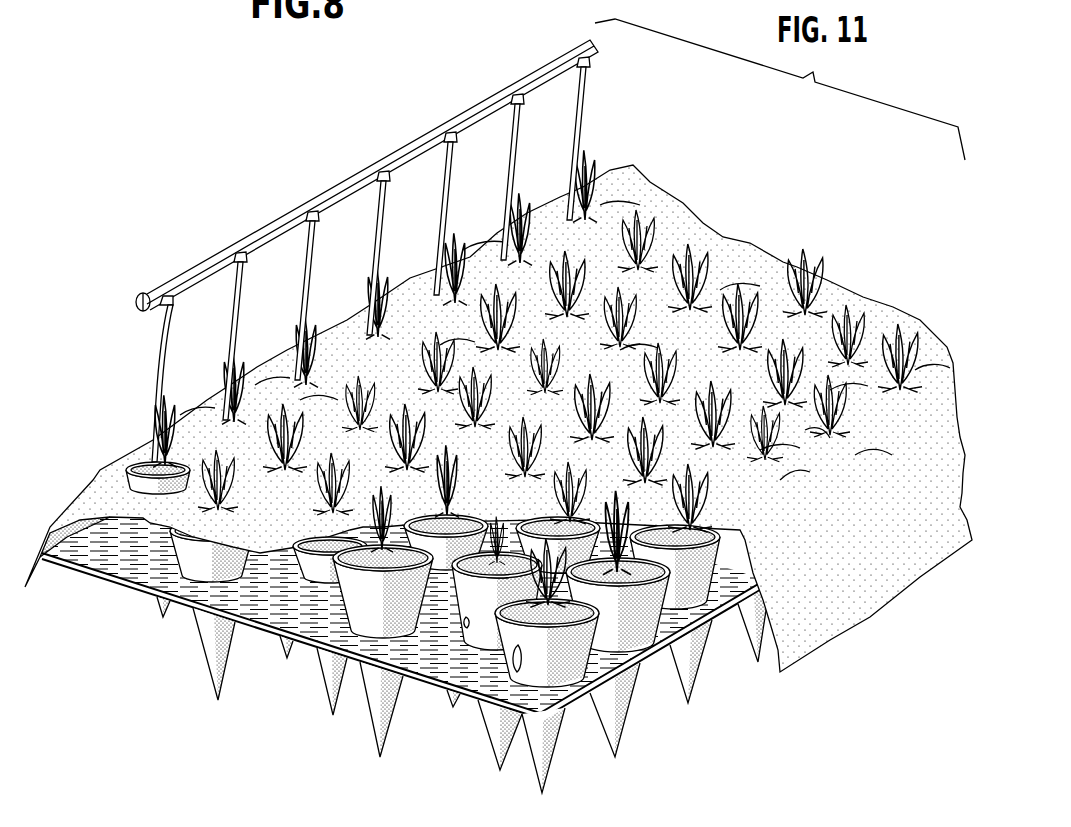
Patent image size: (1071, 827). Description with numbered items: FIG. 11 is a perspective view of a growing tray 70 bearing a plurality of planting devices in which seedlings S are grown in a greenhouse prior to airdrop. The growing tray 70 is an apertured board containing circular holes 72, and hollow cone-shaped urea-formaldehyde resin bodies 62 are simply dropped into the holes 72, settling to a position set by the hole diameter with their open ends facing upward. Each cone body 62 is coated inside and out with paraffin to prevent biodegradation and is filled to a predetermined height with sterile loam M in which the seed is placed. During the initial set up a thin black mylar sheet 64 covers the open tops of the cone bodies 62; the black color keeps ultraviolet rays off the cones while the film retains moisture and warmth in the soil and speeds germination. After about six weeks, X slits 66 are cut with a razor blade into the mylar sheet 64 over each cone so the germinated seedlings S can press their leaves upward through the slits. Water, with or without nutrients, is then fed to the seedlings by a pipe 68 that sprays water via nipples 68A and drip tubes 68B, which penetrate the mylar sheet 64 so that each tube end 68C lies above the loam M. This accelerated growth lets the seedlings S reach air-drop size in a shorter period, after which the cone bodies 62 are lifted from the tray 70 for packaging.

The urea-formaldehyde resin bodies 62 is at (283, 655).
The mylar black sheet 64 is at (862, 597).
The X slits 66 is at (768, 478).
The pipe 68 is at (263, 240).
The nipples 68A is at (310, 218).
The drip tubes 68B is at (488, 170).
The tube end 68C is at (140, 472).
The growing tray 70 is at (471, 706).
The circular holes 72 is at (392, 625).
The seedlings S is at (580, 490).
The loam M is at (498, 459).